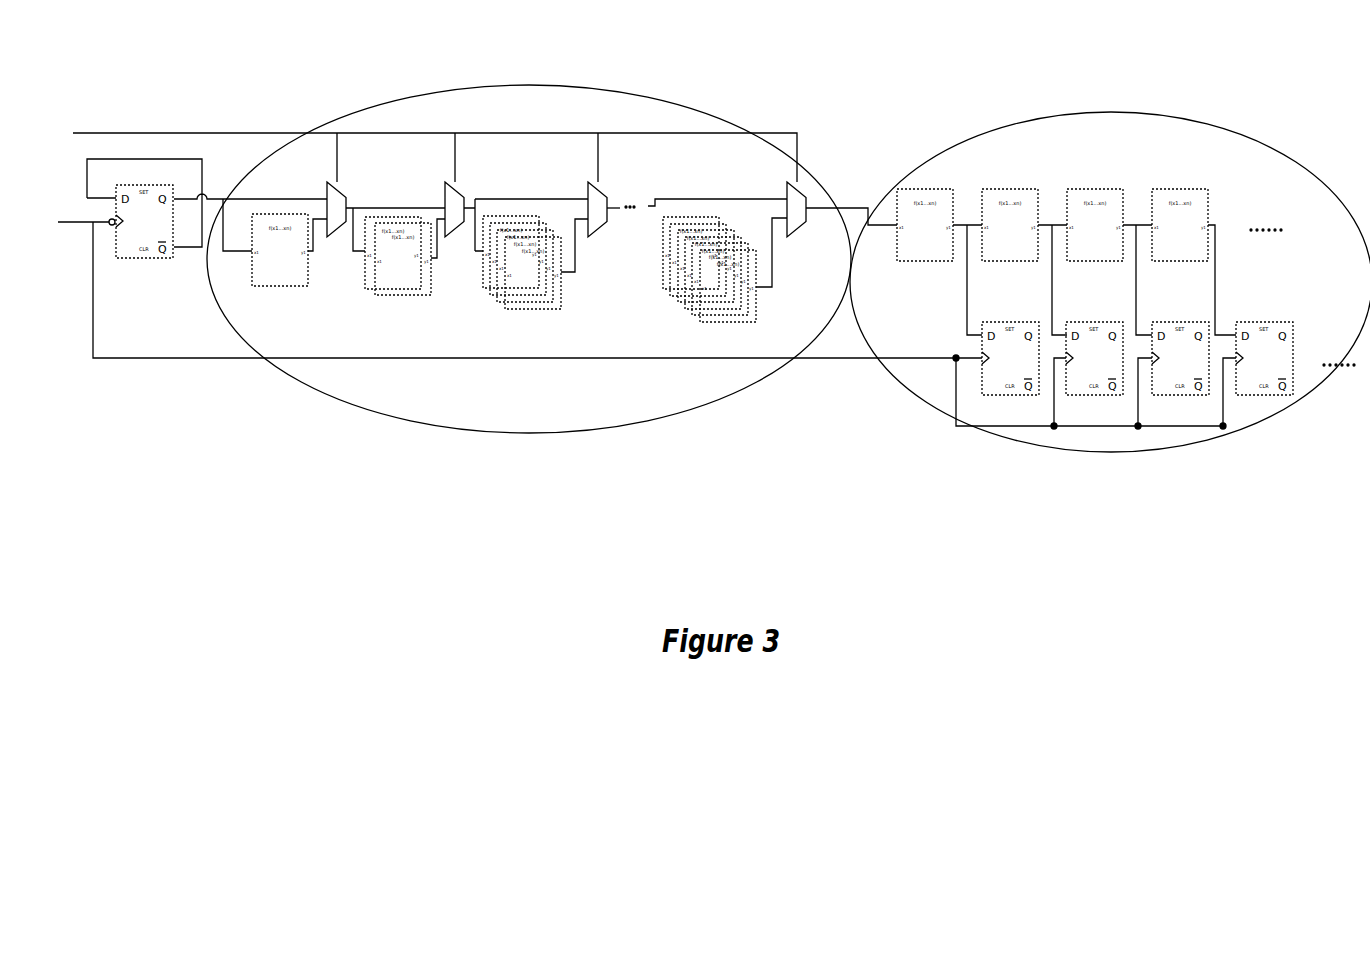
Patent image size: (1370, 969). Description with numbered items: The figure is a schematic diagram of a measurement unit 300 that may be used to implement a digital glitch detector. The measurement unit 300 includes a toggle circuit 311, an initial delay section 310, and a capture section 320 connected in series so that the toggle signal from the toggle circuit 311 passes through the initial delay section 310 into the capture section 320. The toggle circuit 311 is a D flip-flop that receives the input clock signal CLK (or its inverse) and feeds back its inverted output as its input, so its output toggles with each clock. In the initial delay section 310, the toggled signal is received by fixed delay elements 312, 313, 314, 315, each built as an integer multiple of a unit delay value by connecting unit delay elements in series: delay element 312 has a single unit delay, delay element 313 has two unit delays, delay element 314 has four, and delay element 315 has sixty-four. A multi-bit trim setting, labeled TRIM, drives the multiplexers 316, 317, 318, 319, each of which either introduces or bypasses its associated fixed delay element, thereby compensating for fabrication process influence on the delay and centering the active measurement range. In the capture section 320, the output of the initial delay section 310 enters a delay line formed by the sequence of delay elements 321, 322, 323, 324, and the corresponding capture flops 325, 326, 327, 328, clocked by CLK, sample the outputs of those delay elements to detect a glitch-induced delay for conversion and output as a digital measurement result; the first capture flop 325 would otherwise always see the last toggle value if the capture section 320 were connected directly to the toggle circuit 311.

The measurement unit 300 is at (104, 53).
The initial delay section 310 is at (603, 71).
The toggle circuit 311 is at (130, 231).
The fixed delay element 312 is at (266, 265).
The fixed delay element 313 is at (387, 276).
The fixed delay element 314 is at (518, 288).
The fixed delay element 315 is at (714, 295).
The multiplexer 316 is at (327, 188).
The multiplexer 317 is at (445, 188).
The multiplexer 318 is at (589, 188).
The multiplexer 319 is at (790, 188).
The capture section 320 is at (1218, 100).
The delay element 321 is at (910, 236).
The delay element 322 is at (995, 236).
The delay element 323 is at (1080, 236).
The delay element 324 is at (1165, 236).
The capture flop 325 is at (996, 368).
The capture flop 326 is at (1080, 368).
The capture flop 327 is at (1166, 368).
The capture flop 328 is at (1250, 368).